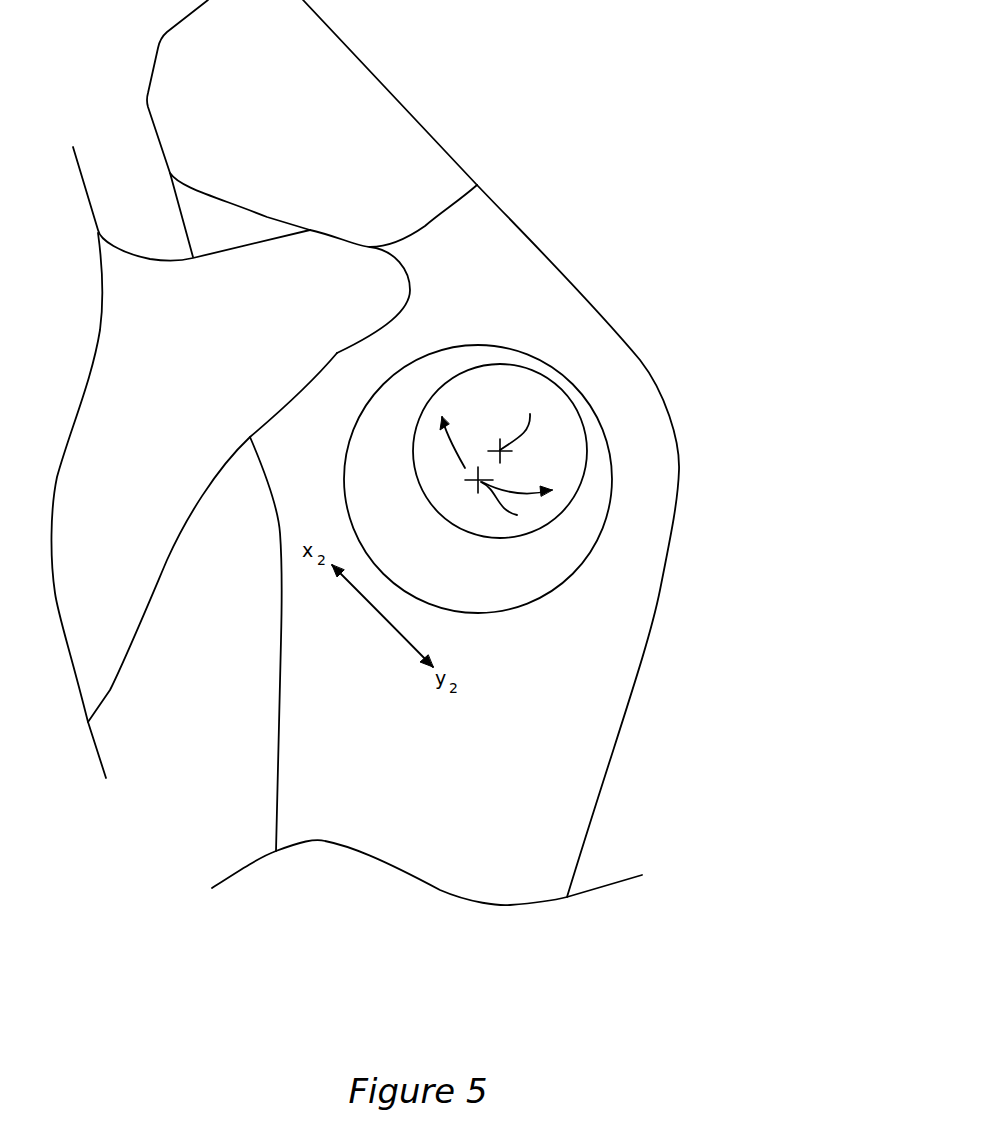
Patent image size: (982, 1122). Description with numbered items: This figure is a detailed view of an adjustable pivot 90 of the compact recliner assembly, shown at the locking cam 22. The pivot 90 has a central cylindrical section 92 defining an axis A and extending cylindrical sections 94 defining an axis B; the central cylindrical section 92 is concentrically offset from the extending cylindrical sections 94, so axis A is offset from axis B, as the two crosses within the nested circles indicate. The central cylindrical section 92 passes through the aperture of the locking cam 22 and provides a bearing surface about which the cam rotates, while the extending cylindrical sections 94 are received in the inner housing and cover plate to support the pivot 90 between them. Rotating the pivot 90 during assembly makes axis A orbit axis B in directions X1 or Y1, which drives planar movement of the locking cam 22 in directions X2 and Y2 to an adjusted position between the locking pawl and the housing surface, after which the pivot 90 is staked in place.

The locking cam 22 is at (582, 725).
The adjustable pivot 90 is at (577, 479).
The central cylindrical section 92 is at (570, 580).
The extending cylindrical sections 94 is at (575, 495).